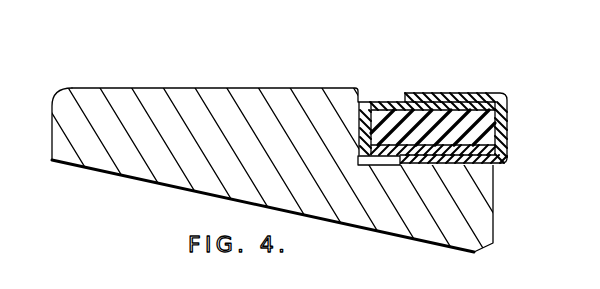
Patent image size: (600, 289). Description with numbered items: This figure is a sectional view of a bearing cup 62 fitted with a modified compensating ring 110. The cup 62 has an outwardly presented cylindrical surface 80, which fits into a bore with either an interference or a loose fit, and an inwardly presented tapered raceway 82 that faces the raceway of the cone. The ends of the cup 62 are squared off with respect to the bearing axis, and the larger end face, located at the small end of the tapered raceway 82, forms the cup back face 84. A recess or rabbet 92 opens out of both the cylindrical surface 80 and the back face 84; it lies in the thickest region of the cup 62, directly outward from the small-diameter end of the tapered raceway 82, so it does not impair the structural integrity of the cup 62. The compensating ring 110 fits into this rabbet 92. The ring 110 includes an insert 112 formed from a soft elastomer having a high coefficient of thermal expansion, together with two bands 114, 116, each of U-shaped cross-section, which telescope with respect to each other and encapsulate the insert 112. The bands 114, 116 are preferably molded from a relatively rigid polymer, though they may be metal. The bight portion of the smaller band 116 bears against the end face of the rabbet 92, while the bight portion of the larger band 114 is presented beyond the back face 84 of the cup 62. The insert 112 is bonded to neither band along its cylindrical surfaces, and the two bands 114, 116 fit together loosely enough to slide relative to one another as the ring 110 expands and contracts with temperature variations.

The cup 62 is at (177, 95).
The cylindrical surface 80 is at (249, 88).
The tapered raceway 82 is at (125, 176).
The cup back face 84 is at (493, 219).
The rabbet 92 is at (391, 160).
The compensating ring 110 is at (501, 91).
The insert 112 is at (430, 99).
The larger band 114 is at (505, 142).
The smaller band 116 is at (383, 103).